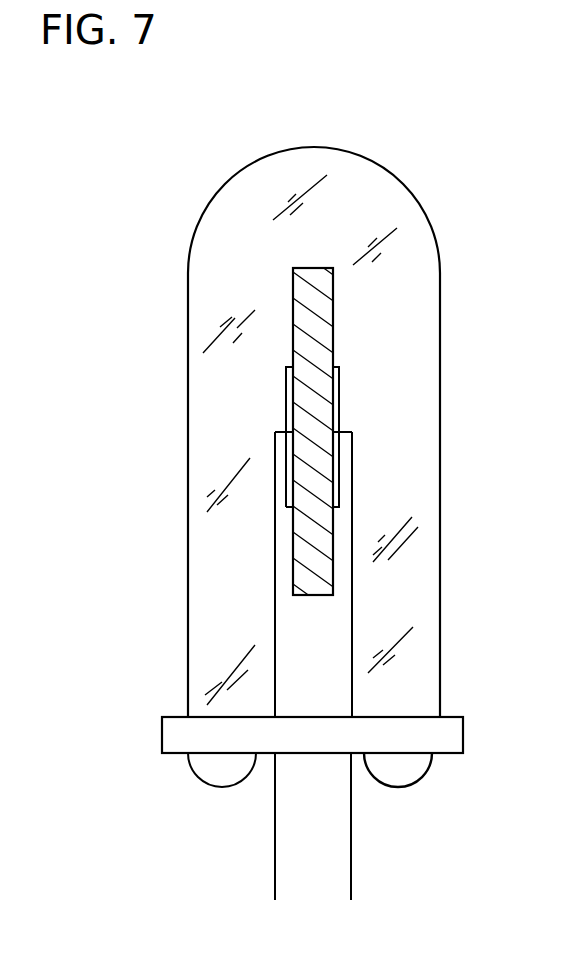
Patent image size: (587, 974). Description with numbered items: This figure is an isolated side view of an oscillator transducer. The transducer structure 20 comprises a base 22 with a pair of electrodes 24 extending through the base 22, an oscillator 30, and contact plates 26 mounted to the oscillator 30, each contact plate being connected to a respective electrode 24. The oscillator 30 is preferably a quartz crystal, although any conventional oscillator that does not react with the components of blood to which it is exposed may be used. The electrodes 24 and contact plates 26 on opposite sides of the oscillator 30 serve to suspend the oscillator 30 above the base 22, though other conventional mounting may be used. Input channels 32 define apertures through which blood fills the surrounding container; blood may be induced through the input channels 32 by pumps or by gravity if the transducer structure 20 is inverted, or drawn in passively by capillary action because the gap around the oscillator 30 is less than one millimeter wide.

The transducer structure 20 is at (172, 462).
The base 22 is at (465, 738).
The electrodes 24 is at (391, 168).
The contact plates 26 is at (340, 400).
The oscillator 30 is at (334, 310).
The input channels 32 is at (192, 768).